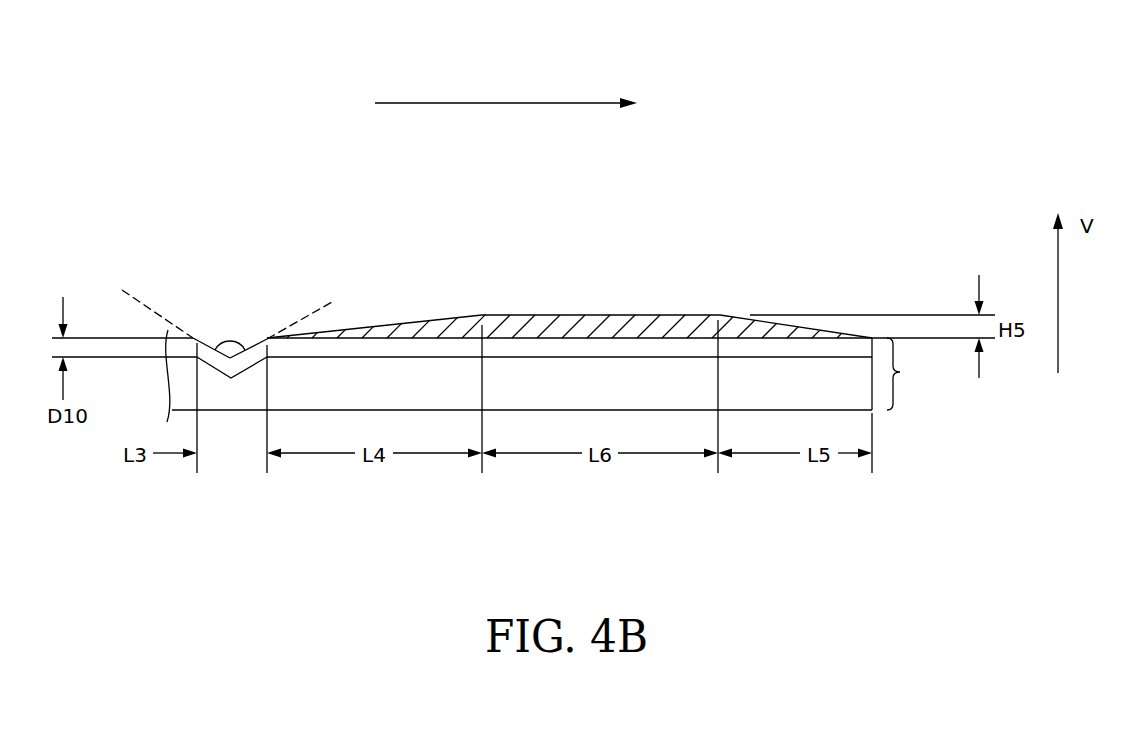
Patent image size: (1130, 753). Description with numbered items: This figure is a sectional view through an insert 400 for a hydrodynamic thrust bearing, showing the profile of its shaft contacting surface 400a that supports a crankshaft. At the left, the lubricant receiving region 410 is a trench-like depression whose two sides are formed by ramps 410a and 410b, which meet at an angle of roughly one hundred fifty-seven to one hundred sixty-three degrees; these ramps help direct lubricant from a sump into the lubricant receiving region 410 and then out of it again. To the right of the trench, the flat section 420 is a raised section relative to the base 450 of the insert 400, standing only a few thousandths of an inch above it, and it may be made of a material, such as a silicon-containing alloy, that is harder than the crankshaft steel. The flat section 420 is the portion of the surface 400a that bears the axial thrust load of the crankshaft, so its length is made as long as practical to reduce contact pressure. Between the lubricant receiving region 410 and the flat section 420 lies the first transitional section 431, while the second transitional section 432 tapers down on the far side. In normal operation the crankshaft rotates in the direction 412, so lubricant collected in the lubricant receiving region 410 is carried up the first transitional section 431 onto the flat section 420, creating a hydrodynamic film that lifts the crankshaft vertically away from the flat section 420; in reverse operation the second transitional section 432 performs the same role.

The insert 400 is at (1050, 56).
The shaft contacting surface 400a is at (873, 316).
The lubricant receiving region 410 is at (247, 352).
The ramp 410a is at (207, 342).
The ramp 410b is at (257, 342).
The rotation direction 412 is at (512, 96).
The flat section 420 is at (595, 315).
The first transitional section 431 is at (425, 322).
The second transitional section 432 is at (773, 320).
The base 450 is at (900, 372).